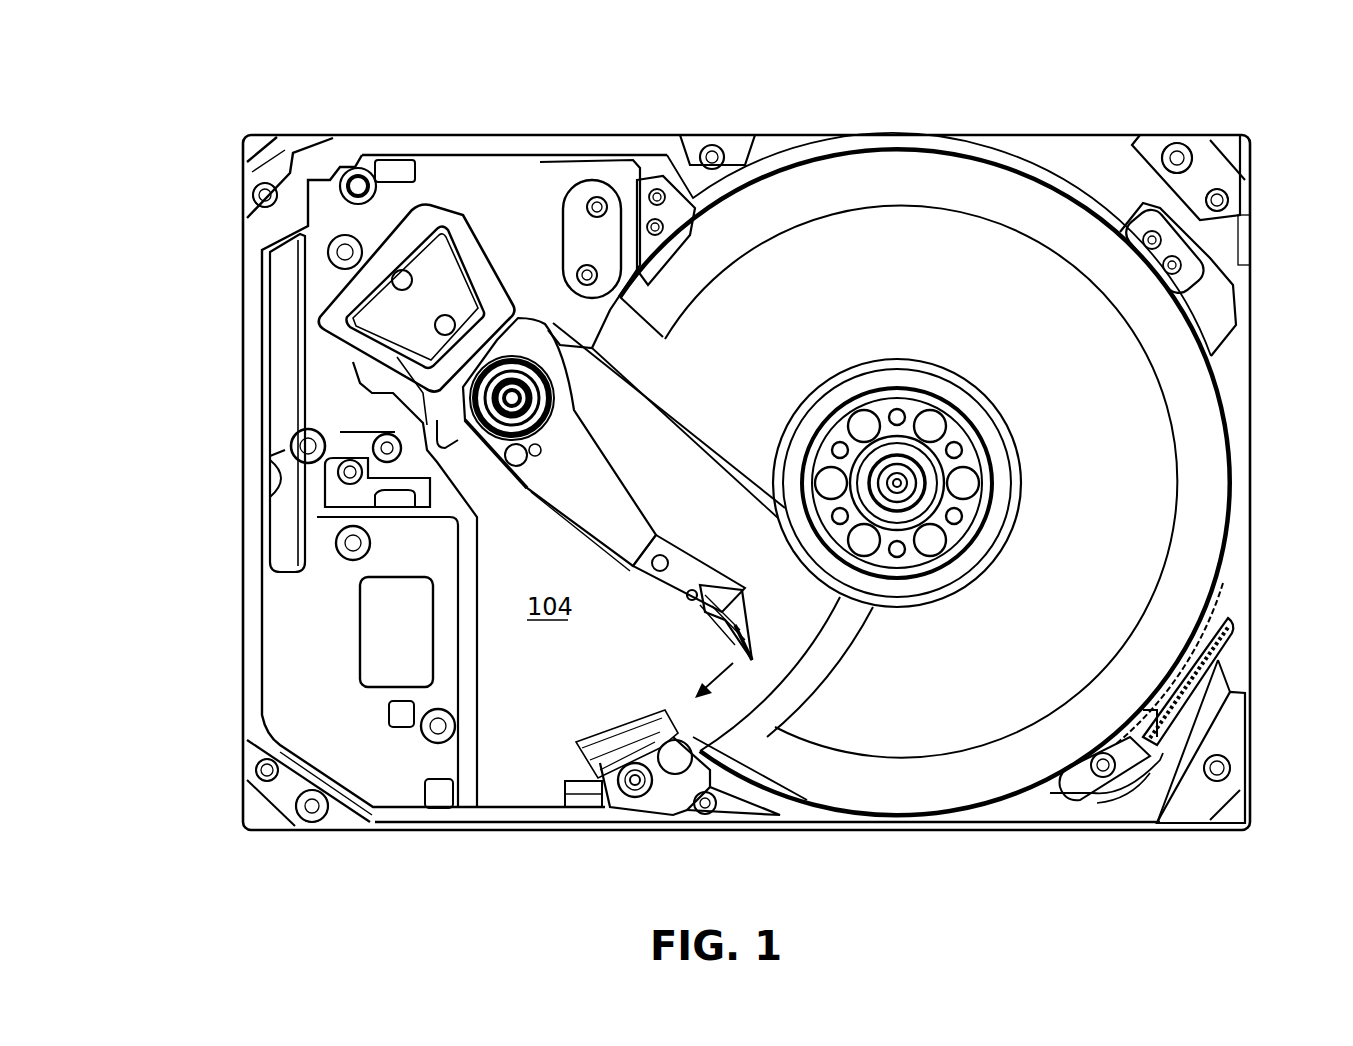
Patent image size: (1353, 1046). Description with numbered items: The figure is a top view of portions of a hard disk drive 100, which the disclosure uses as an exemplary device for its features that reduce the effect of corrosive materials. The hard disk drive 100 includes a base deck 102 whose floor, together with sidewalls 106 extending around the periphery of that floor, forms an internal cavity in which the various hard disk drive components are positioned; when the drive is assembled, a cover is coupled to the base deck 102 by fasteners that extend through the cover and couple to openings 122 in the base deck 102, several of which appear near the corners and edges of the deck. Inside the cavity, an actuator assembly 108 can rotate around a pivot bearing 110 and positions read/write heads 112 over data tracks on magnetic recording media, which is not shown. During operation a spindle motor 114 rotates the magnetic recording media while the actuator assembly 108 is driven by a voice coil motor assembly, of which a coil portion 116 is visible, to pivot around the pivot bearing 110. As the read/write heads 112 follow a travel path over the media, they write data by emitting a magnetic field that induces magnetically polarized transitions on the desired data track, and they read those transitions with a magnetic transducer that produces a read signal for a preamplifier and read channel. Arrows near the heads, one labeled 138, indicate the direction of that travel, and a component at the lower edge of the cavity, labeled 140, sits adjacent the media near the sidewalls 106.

The hard disk drive 100 is at (182, 122).
The base deck 102 is at (205, 675).
The sidewalls 106 is at (632, 153).
The actuator assembly 108 is at (530, 318).
The pivot bearing 110 is at (522, 385).
The read/write heads 112 is at (752, 660).
The spindle motor 114 is at (923, 383).
The coil portion 116 is at (425, 222).
The openings 122 is at (1178, 145).
The direction arrow 138 is at (722, 676).
The load/unload ramp 140 is at (614, 780).